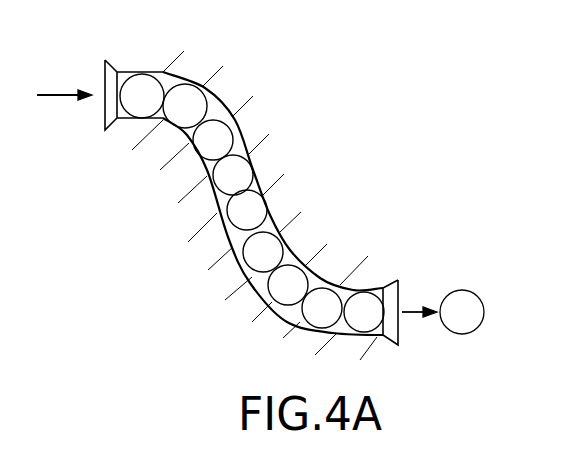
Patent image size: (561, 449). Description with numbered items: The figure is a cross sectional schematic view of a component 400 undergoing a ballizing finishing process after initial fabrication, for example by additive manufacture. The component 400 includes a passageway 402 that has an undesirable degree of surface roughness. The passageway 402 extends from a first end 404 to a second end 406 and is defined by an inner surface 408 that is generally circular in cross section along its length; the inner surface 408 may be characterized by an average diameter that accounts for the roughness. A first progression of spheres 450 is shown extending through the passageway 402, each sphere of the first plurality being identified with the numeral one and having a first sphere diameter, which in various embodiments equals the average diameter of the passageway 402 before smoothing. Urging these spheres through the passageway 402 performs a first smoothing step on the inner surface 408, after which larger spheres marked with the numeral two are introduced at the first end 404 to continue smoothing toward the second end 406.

The component 400 is at (436, 114).
The passageway 402 is at (245, 145).
The first end 404 is at (117, 71).
The second end 406 is at (397, 278).
The inner surface 408 is at (230, 240).
The first progression of spheres 450 is at (315, 237).